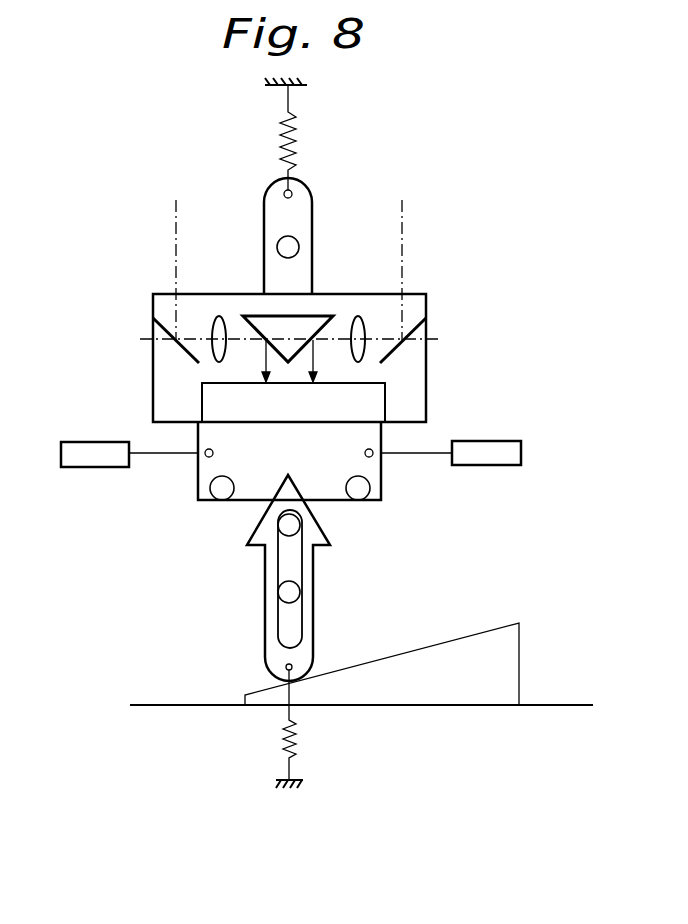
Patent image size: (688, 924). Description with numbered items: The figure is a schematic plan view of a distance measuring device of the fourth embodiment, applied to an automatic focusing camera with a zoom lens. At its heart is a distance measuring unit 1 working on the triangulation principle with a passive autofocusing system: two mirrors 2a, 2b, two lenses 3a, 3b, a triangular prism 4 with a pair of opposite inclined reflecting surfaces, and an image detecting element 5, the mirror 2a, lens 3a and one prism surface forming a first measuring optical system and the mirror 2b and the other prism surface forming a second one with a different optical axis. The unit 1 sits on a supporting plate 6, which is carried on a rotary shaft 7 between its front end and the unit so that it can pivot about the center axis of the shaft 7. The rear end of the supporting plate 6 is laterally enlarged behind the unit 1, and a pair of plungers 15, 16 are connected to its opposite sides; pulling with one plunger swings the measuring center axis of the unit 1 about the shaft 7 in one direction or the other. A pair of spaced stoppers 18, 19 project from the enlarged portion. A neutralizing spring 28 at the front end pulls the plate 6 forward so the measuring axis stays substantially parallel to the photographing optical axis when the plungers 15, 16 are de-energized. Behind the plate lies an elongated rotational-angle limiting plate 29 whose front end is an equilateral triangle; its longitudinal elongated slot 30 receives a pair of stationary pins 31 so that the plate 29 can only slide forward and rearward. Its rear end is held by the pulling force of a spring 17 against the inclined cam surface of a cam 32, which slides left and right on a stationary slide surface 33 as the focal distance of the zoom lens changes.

The distance measuring unit 1 is at (436, 394).
The mirror 2a is at (172, 340).
The mirror 2b is at (410, 340).
The lens 3a is at (209, 300).
The lens 3b is at (364, 300).
The triangular prism 4 is at (256, 302).
The image detecting element 5 is at (384, 406).
The supporting plate 6 is at (303, 276).
The rotary shaft 7 is at (296, 246).
The plunger 15 is at (500, 458).
The plunger 16 is at (111, 460).
The spring 17 is at (305, 740).
The stopper 18 is at (360, 496).
The stopper 19 is at (218, 496).
The neutralizing spring 28 is at (297, 140).
The rotational-angle limiting plate 29 is at (314, 576).
The elongated slot 30 is at (284, 628).
The stationary pins 31 is at (283, 524).
The cam 32 is at (483, 640).
The stationary slide surface 33 is at (573, 700).